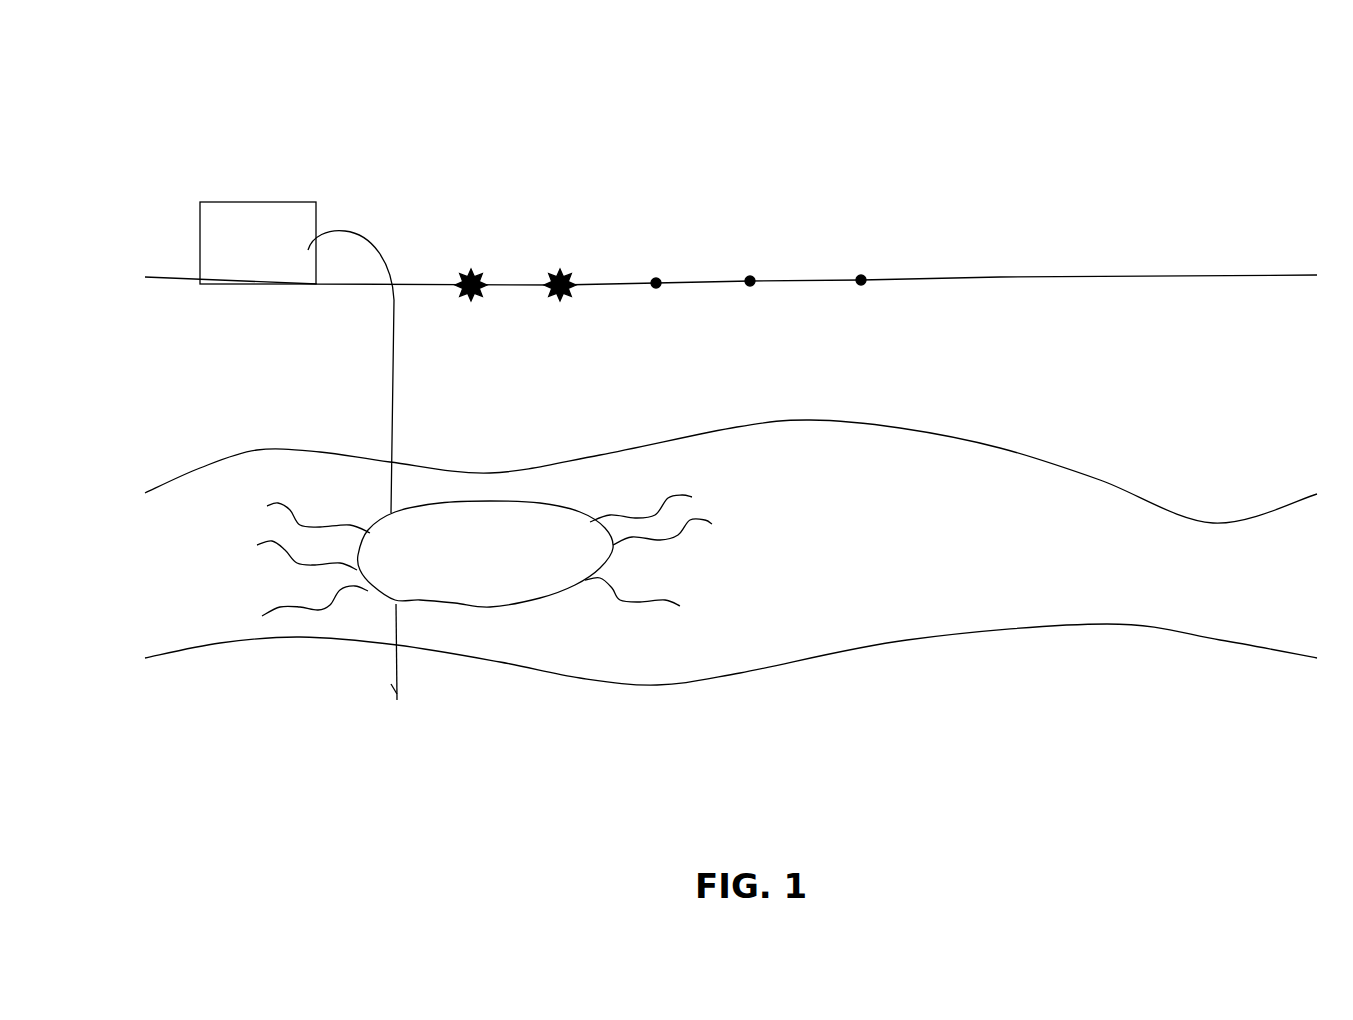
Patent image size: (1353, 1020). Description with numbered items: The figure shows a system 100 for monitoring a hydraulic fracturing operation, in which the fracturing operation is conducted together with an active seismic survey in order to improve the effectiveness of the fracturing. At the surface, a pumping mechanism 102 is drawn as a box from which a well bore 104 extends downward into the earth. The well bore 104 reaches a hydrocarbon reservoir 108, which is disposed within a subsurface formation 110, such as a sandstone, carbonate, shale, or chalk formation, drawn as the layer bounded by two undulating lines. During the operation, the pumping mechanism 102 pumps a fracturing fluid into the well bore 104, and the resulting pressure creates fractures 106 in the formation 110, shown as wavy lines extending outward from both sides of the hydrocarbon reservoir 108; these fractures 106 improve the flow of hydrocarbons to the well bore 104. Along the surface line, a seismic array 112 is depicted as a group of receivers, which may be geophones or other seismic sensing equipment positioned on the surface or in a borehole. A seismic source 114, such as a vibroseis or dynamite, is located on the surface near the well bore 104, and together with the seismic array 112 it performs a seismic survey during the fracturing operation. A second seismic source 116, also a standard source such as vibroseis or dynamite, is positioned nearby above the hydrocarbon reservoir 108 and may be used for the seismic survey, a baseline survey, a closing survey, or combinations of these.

The system 100 is at (213, 47).
The pumping mechanism 102 is at (308, 228).
The well bore 104 is at (393, 385).
The fractures 106 is at (263, 497).
The hydrocarbon reservoir 108 is at (485, 554).
The subsurface formation 110 is at (731, 552).
The seismic array 112 is at (893, 288).
The seismic source 114 is at (558, 270).
The second seismic source 116 is at (468, 270).